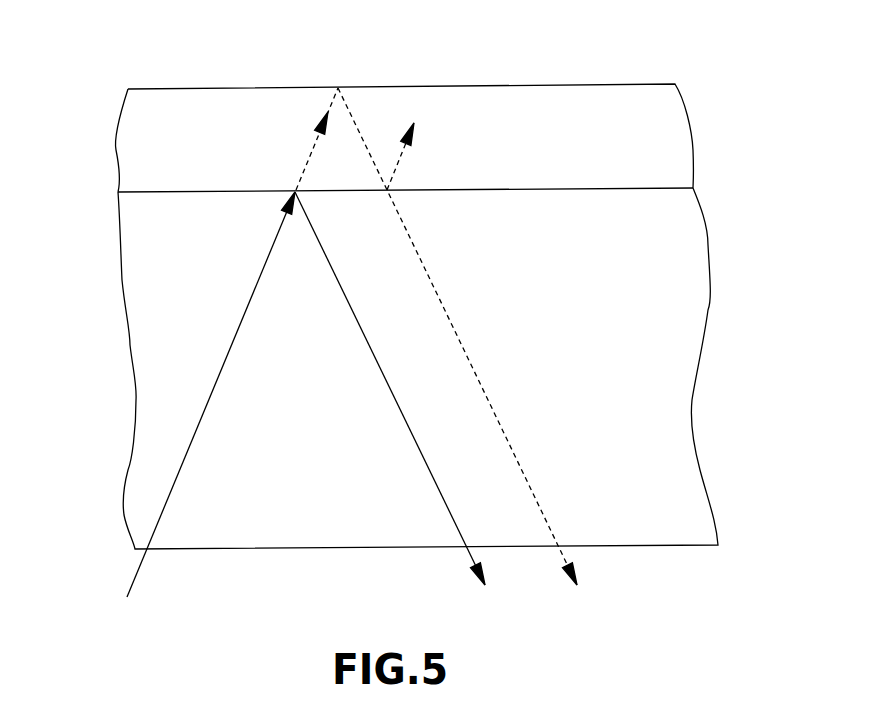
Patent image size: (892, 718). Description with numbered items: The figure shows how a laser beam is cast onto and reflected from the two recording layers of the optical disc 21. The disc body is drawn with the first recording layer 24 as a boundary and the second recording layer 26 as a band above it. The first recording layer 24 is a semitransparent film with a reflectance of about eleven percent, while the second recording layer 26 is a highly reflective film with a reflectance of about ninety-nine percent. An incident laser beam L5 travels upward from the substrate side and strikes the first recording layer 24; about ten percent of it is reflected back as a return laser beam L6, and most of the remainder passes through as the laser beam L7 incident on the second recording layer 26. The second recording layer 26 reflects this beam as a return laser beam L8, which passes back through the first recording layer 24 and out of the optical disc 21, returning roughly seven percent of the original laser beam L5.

The optical disc 21 is at (157, 392).
The first recording layer 24 is at (164, 193).
The second recording layer 26 is at (160, 89).
The laser beam L5 is at (210, 398).
The return laser beam L6 is at (367, 347).
The laser beam L7 is at (308, 158).
The return laser beam L8 is at (455, 330).